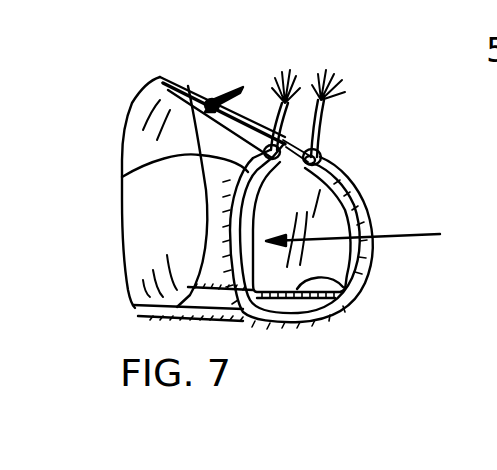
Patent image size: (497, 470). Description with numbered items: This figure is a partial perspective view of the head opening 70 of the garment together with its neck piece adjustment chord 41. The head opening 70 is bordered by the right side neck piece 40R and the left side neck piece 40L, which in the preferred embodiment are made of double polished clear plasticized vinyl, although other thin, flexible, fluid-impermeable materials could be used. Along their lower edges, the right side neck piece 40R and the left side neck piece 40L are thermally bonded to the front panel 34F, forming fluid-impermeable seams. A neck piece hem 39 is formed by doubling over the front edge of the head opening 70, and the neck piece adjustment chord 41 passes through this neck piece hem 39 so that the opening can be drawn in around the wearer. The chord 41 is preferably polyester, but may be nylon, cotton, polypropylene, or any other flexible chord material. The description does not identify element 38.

The strap with clip 38 is at (217, 98).
The neck piece hem 39 is at (128, 180).
The right side neck piece 40R is at (162, 215).
The left side neck piece 40L is at (313, 190).
The neck piece adjustment chord 41 is at (318, 128).
The head opening 70 is at (440, 234).
The front panel 34F is at (343, 287).